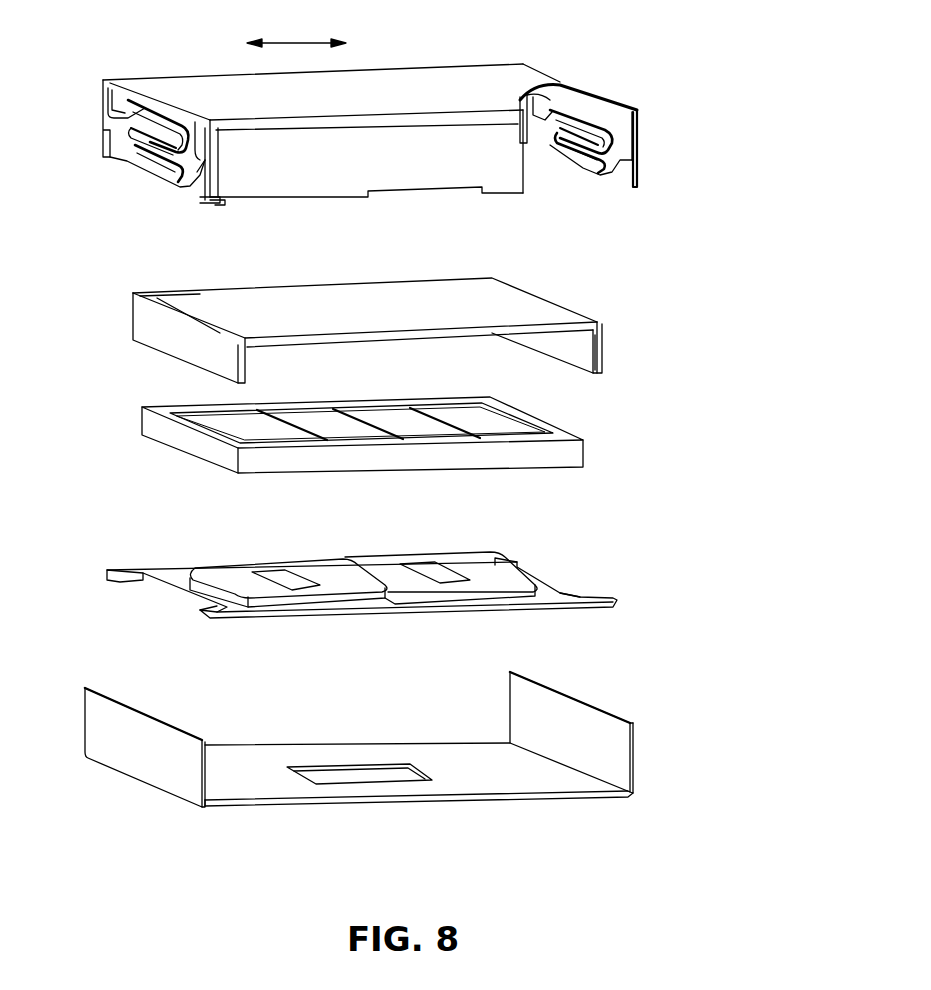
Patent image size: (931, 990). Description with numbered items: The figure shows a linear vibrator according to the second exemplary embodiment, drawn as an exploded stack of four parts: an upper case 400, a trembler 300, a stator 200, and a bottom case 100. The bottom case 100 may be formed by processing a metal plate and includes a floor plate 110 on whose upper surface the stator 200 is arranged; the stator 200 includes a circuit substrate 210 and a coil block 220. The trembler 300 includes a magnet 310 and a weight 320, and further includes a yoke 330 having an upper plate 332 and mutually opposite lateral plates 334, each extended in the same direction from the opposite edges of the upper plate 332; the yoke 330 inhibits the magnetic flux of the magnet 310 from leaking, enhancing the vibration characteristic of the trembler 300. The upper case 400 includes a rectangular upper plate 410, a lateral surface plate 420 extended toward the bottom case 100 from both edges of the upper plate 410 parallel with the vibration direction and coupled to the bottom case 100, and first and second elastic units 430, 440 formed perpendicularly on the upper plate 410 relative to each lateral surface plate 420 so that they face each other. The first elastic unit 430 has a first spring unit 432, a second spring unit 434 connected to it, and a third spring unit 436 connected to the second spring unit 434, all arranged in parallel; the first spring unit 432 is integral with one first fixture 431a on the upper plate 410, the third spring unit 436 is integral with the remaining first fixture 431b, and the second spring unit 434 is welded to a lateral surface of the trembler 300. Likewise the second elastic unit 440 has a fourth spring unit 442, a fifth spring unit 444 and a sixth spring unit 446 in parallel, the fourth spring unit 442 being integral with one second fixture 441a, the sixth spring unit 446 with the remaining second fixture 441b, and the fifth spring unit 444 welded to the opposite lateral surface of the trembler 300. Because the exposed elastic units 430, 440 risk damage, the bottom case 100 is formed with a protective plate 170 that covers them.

The bottom case 100 is at (488, 784).
The floor plate 110 is at (430, 757).
The protective plate 170 is at (550, 707).
The stator 200 is at (655, 587).
The circuit substrate 210 is at (553, 592).
The coil block 220 is at (328, 578).
The trembler 300 is at (727, 378).
The magnet 310 is at (393, 423).
The weight 320 is at (577, 450).
The yoke 330 is at (660, 265).
The upper plate 332 is at (547, 308).
The lateral plates 334 is at (600, 347).
The upper case 400 is at (700, 117).
The upper plate 410 is at (415, 78).
The lateral surface plate 420 is at (340, 181).
The first elastic unit 430 is at (108, 170).
The first fixture 431a is at (107, 115).
The first fixture 431b is at (203, 175).
The first spring unit 432 is at (150, 115).
The second spring unit 434 is at (130, 130).
The third spring unit 436 is at (157, 168).
The second elastic unit 440 is at (553, 167).
The second fixture 441a is at (528, 110).
The second fixture 441b is at (633, 165).
The fourth spring unit 442 is at (573, 100).
The fifth spring unit 444 is at (587, 133).
The sixth spring unit 446 is at (583, 163).